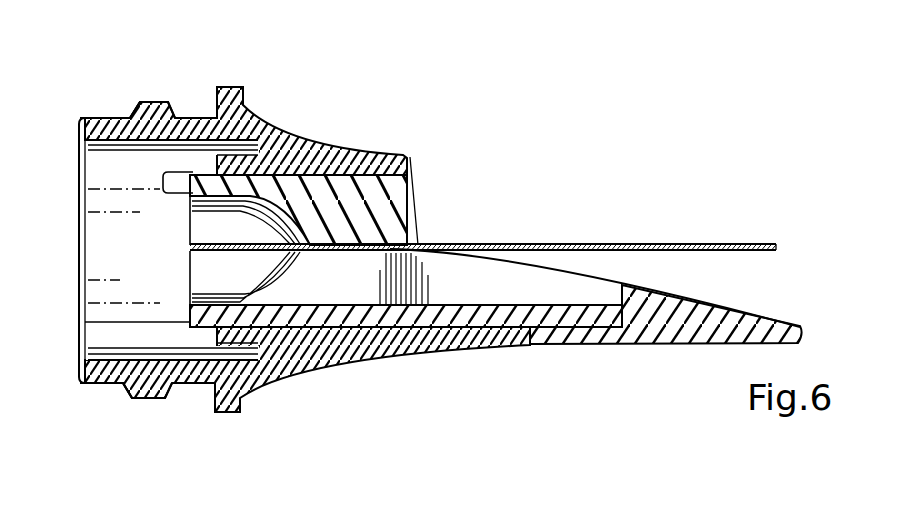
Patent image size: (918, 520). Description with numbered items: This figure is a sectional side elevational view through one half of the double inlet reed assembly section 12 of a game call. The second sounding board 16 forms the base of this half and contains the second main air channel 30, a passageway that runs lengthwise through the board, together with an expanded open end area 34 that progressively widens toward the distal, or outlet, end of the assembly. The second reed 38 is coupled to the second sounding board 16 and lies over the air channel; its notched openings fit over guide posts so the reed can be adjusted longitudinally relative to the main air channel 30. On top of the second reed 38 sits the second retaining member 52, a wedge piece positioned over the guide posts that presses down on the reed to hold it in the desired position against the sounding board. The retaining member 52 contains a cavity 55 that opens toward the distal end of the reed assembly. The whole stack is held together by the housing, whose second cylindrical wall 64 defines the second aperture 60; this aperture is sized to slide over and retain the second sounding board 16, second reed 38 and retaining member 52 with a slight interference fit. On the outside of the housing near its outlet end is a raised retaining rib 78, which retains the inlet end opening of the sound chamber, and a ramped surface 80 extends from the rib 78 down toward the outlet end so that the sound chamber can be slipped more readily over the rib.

The double inlet reed assembly section 12 is at (429, 261).
The second sounding board 16 is at (767, 307).
The second main air channel 30 is at (522, 297).
The expanded open end area 34 is at (207, 287).
The second reed 38 is at (682, 246).
The second retaining member 52 is at (400, 201).
The cavity 55 is at (207, 233).
The second aperture 60 is at (115, 327).
The second cylindrical wall 64 is at (80, 122).
The raised retaining rib 78 is at (153, 110).
The ramped surface 80 is at (137, 108).